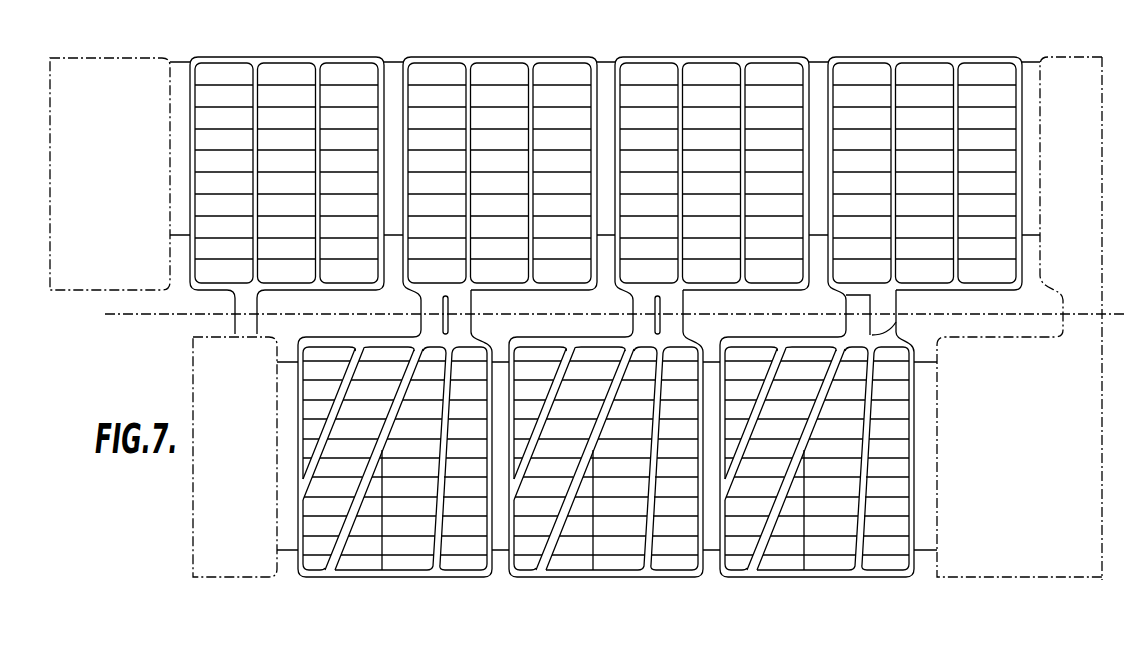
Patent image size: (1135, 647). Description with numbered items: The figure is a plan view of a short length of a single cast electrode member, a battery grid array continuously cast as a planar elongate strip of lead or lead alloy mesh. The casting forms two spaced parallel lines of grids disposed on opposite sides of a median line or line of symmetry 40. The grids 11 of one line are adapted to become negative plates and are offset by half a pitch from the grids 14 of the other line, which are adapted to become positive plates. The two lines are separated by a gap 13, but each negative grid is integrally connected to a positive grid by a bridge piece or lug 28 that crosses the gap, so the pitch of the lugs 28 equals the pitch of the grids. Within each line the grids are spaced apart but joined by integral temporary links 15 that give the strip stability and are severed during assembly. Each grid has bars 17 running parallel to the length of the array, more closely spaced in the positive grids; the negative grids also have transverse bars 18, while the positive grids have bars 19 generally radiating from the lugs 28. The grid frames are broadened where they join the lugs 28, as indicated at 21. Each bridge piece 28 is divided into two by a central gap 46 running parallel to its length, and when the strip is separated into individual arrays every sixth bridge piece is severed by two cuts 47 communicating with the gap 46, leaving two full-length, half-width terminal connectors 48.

The grids 11 is at (529, 54).
The gap 13 is at (305, 312).
The grids 14 is at (600, 580).
The temporary links 15 is at (387, 59).
The bars 17 is at (275, 108).
The bars 18 is at (253, 185).
The bars 19 is at (350, 505).
The broadened grid frame portion 21 is at (670, 341).
The bridge piece or lug 28 is at (465, 327).
The median line or line of symmetry 40 is at (1011, 320).
The central gap 46 is at (653, 313).
The cuts 47 is at (856, 296).
The terminal connectors 48 is at (243, 327).